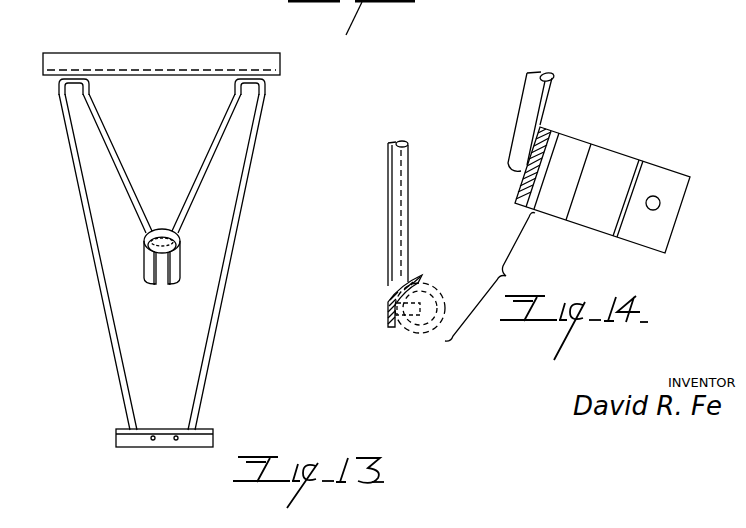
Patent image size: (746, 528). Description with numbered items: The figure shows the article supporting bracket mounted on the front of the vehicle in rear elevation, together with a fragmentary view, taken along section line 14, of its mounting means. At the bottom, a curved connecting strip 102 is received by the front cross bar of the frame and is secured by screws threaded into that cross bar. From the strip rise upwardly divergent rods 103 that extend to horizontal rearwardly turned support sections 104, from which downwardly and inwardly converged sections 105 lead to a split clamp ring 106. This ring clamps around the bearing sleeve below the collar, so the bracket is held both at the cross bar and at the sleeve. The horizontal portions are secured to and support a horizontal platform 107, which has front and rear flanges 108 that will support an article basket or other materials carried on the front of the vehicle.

In FIG. 13, the section line 14 is at (163, 222).
In FIG. 13, the curved connecting strip 102 is at (210, 437).
In FIG. 14, the curved connecting strip 102 is at (397, 308).
In FIG. 13, the upwardly divergent rods 103 is at (215, 328).
In FIG. 14, the upwardly divergent rods 103 is at (397, 212).
In FIG. 13, the horizontal rearwardly turned support sections 104 is at (248, 82).
In FIG. 13, the downwardly and inwardly converged sections 105 is at (212, 142).
In FIG. 14, the downwardly and inwardly converged sections 105 is at (540, 108).
In FIG. 13, the split clamp ring 106 is at (182, 252).
In FIG. 14, the split clamp ring 106 is at (557, 135).
In FIG. 13, the horizontal platform 107 is at (172, 72).
In FIG. 13, the front and rear flanges 108 is at (95, 62).